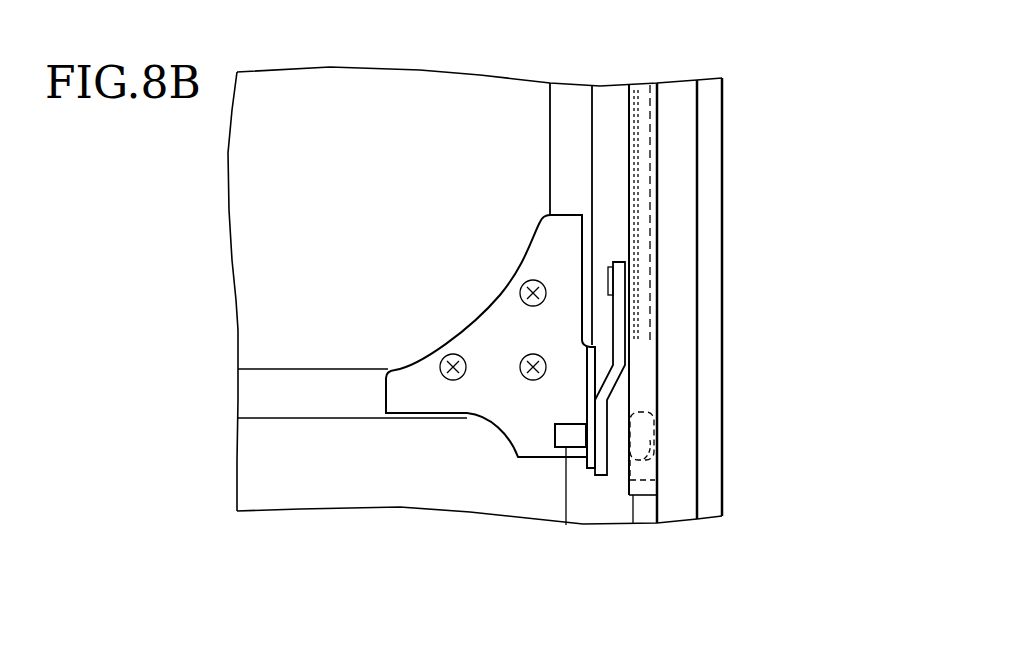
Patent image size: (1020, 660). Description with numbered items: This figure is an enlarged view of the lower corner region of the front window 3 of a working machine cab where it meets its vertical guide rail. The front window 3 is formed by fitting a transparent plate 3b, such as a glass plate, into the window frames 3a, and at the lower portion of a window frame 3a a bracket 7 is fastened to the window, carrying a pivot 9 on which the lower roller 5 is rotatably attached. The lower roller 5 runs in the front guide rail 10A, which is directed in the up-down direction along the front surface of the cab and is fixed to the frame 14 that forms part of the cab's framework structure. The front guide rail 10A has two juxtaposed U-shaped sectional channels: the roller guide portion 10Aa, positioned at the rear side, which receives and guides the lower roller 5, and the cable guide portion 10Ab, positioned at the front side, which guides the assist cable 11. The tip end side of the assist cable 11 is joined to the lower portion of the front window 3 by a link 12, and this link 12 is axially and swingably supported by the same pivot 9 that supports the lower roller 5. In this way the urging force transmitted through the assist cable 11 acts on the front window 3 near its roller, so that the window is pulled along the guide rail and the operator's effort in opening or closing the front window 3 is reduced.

The front window 3 is at (342, 108).
The window frame 3a is at (280, 392).
The transparent plate 3b is at (265, 197).
The lower roller 5 is at (658, 462).
The bracket 7 is at (498, 402).
The pivot 9 is at (567, 438).
The front guide rail 10A is at (660, 380).
The roller guide portion 10Aa is at (642, 402).
The cable guide portion 10Ab is at (657, 145).
The assist cable 11 is at (641, 107).
The link 12 is at (618, 322).
The frame 14 is at (682, 177).